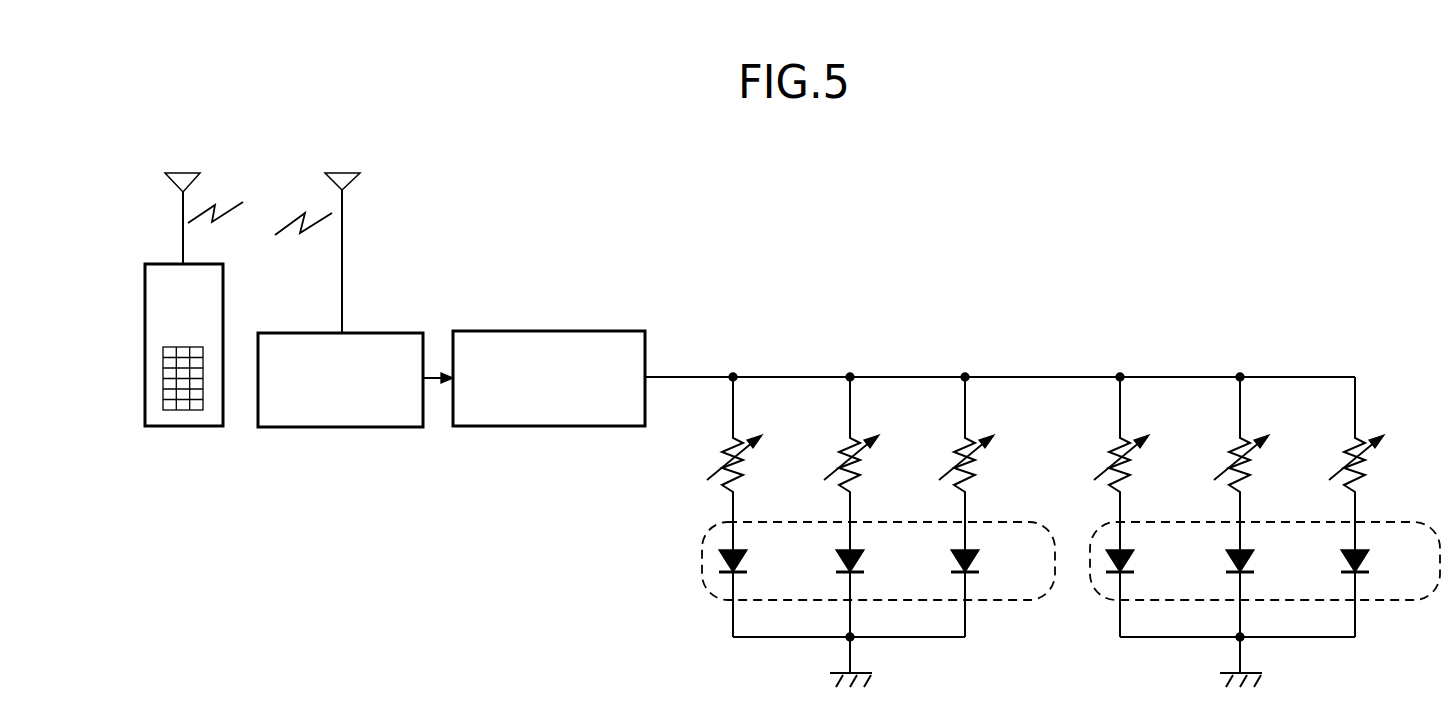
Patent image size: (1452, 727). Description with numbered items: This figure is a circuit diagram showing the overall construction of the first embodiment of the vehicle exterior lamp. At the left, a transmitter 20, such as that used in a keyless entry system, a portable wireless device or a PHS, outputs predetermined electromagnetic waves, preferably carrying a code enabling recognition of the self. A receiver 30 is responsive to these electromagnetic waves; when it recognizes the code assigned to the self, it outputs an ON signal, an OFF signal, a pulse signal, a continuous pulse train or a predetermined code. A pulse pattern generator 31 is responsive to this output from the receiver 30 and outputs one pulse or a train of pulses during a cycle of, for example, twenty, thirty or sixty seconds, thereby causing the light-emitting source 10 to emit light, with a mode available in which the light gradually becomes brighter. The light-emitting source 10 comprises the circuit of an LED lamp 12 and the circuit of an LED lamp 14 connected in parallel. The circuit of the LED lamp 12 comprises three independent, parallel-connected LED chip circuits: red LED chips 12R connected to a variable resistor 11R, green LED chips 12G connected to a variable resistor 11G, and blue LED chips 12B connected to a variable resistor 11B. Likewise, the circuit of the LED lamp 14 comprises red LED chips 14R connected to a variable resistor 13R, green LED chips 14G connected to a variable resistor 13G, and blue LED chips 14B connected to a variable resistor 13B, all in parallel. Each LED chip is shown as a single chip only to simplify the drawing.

The light-emitting source 10 is at (1365, 347).
The variable resistor 11R is at (722, 450).
The variable resistor 11G is at (843, 448).
The variable resistor 11B is at (960, 448).
The LED lamp 12 is at (715, 600).
The red LED chip 12R is at (759, 592).
The green LED chip 12G is at (877, 592).
The blue LED chip 12B is at (990, 592).
The variable resistor 13R is at (1112, 448).
The variable resistor 13G is at (1232, 448).
The variable resistor 13B is at (1348, 448).
The LED lamp 14 is at (1105, 598).
The red LED chip 14R is at (1146, 592).
The green LED chip 14G is at (1267, 592).
The blue LED chip 14B is at (1379, 592).
The transmitter 20 is at (187, 430).
The receiver 30 is at (342, 430).
The pulse pattern generator 31 is at (557, 331).